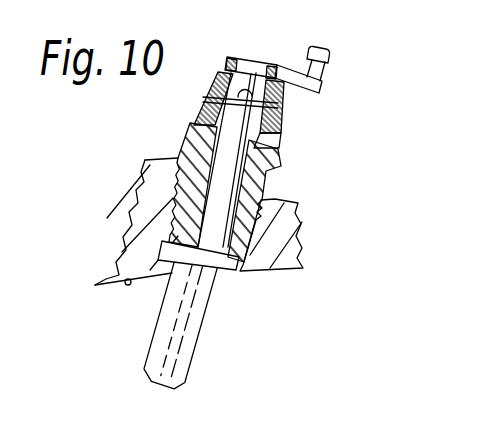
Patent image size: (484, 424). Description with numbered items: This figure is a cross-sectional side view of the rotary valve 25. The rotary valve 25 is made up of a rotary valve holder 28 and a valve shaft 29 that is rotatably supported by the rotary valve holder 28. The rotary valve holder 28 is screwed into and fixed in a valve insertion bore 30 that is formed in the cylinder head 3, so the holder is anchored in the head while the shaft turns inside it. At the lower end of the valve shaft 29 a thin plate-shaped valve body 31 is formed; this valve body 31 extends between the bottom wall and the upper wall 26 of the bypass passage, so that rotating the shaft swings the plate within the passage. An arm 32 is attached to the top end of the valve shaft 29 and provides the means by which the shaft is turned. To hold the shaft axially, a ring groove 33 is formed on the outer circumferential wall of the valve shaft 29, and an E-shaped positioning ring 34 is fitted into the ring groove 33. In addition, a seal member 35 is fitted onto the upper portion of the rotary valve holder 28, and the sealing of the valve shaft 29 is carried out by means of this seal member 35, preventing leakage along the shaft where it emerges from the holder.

The cylinder head 3 is at (298, 230).
The rotary valve 25 is at (216, 319).
The upper wall 26 is at (113, 240).
The rotary valve holder 28 is at (283, 172).
The valve shaft 29 is at (190, 142).
The valve insertion bore 30 is at (141, 203).
The valve body 31 is at (178, 358).
The arm 32 is at (313, 95).
The ring groove 33 is at (228, 72).
The E-shaped positioning ring 34 is at (281, 93).
The seal member 35 is at (213, 97).